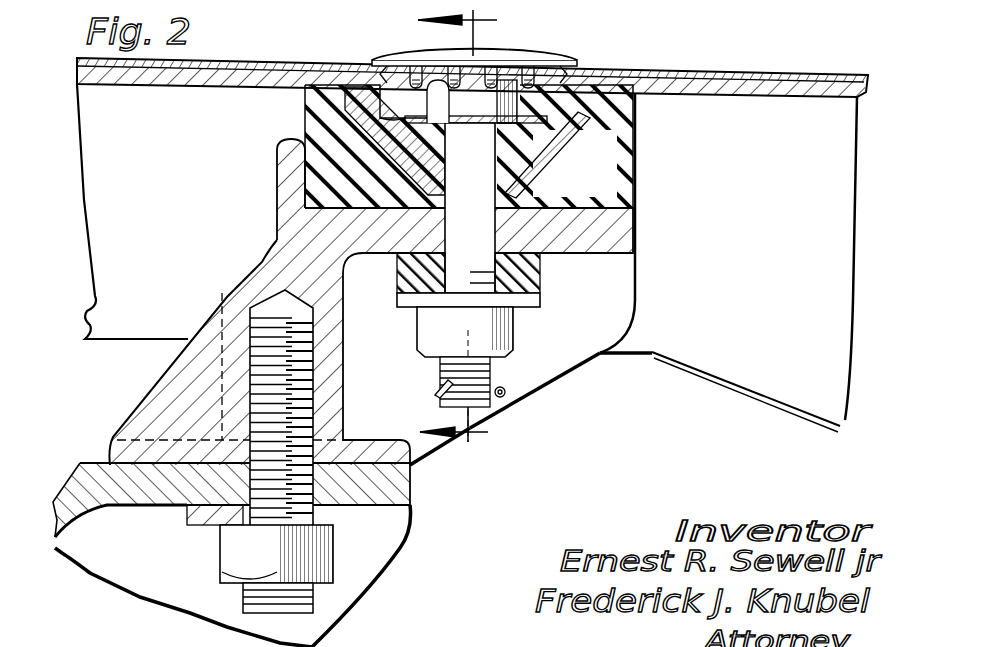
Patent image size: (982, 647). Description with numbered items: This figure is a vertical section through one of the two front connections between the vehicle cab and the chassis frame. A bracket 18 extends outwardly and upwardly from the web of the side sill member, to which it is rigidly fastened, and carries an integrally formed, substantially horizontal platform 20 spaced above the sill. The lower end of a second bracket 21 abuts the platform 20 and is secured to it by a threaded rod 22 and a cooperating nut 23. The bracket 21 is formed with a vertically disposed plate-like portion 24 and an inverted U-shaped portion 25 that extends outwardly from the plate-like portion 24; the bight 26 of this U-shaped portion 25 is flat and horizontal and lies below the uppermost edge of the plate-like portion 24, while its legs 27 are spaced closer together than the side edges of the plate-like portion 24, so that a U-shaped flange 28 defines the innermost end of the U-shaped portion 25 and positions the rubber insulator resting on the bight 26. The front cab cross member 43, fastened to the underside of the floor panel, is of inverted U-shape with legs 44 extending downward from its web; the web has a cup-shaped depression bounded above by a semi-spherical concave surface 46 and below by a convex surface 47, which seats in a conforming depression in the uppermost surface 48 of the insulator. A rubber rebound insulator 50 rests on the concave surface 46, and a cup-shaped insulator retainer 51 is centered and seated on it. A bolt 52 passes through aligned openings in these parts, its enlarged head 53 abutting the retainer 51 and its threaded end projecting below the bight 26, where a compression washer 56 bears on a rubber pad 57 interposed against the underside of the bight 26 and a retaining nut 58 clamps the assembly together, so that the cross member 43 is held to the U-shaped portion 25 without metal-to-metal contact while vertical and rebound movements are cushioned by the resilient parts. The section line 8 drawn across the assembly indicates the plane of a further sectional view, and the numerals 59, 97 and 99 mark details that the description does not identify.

The section line 8- 8 is at (467, 231).
The bracket 18 is at (399, 545).
The platform 20 is at (397, 497).
The bracket 21 is at (433, 452).
The threaded rod 22 is at (313, 380).
The nut 23 is at (320, 563).
The plate-like portion 24 is at (340, 352).
The U-shaped portion 25 is at (550, 382).
The bight 26 is at (635, 232).
The legs 27 is at (568, 348).
The U-shaped flange 28 is at (283, 172).
The front cab cross member 43 is at (778, 402).
The legs 44 is at (697, 352).
The concave surface 46 is at (372, 95).
The convex surface 47 is at (470, 145).
The uppermost surface 48 is at (315, 80).
The rebound insulator 50 is at (547, 155).
The insulator retainer 51 is at (556, 150).
The bolt 52 is at (495, 158).
The enlarged head 53 is at (486, 111).
The compression washer 56 is at (542, 300).
The pad 57 is at (542, 283).
The retaining nut 58 is at (513, 340).
The cotter pin 59 is at (440, 400).
The rubber block face 97 is at (305, 115).
The bracket flange 99 is at (469, 240).